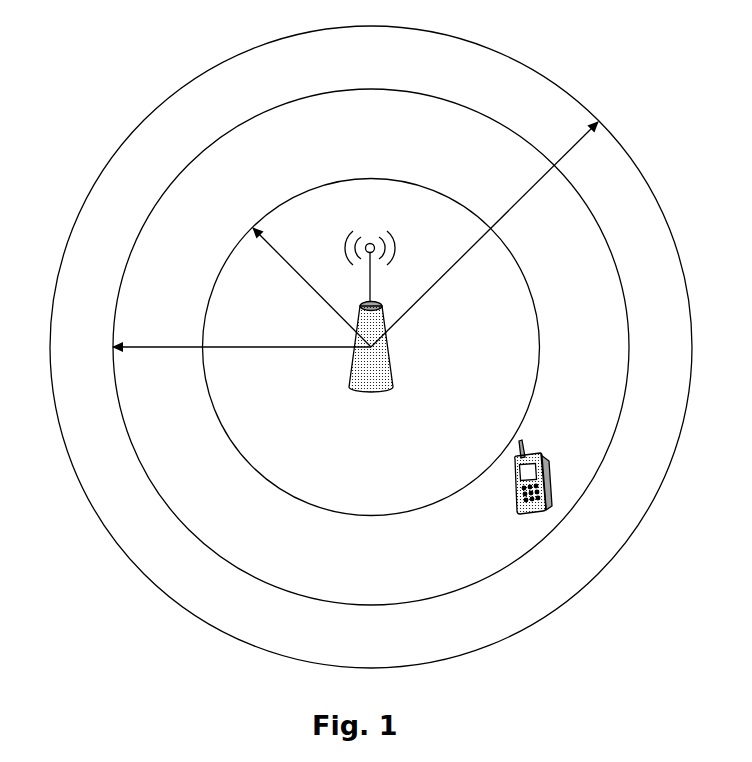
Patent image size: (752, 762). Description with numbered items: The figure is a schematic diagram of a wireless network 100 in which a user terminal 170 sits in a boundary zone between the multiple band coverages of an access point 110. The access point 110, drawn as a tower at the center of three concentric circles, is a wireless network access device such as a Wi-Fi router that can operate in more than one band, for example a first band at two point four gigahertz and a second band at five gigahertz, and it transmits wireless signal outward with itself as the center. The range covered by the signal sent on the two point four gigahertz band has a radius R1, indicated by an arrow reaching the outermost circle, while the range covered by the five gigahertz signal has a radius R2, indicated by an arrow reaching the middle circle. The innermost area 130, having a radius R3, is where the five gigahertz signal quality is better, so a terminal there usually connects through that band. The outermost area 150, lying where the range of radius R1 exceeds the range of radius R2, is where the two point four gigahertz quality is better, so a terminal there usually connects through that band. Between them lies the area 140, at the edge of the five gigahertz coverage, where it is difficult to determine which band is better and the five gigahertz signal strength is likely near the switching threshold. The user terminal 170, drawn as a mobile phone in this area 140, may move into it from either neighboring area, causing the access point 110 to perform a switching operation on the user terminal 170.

The wireless network 100 is at (87, 48).
The access point 110 is at (428, 311).
The area 130 is at (371, 347).
The area 140 is at (371, 347).
The area 150 is at (371, 347).
The user terminal 170 is at (498, 500).
The radius R1 is at (485, 234).
The radius R2 is at (242, 368).
The radius R3 is at (312, 287).